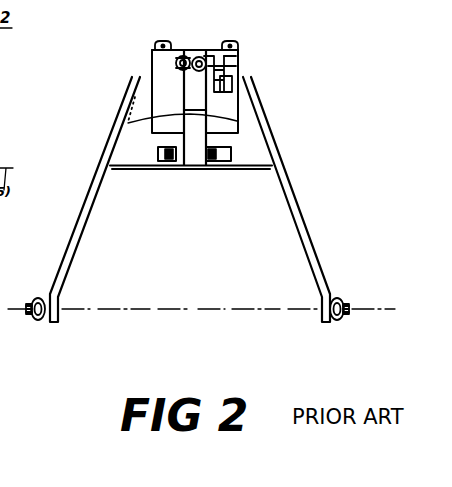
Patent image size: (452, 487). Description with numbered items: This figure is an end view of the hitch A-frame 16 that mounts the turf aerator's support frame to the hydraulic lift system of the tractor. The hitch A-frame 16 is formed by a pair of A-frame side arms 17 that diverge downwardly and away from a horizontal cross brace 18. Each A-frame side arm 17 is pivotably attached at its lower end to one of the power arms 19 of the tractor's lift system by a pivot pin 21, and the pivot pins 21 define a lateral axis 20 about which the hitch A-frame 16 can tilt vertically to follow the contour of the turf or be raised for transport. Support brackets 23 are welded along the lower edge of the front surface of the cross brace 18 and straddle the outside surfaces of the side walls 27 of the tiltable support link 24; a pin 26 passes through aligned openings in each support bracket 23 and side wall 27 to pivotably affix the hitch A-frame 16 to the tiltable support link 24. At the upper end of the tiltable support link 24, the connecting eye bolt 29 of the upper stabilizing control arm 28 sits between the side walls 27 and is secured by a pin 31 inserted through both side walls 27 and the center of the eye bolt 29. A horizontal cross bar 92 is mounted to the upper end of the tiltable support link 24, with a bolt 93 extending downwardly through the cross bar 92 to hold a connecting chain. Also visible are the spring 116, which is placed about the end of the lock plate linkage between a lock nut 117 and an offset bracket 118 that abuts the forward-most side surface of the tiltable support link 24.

The hitch A-frame 16 is at (312, 143).
The A-frame side arms 17 is at (92, 221).
The cross brace 18 is at (127, 133).
The power arms 19 is at (39, 320).
The lateral axis 20 is at (182, 313).
The pivot pin 21 is at (30, 297).
The support brackets 23 is at (159, 148).
The tiltable support link 24 is at (216, 118).
The pin 26 is at (158, 167).
The side wall 27 is at (178, 124).
The upper stabilizing control arm 28 is at (202, 53).
The connecting eye bolt 29 is at (195, 53).
The pin 31 is at (235, 60).
The horizontal cross bar 92 is at (212, 46).
The bolt 93 is at (162, 43).
The spring 116 is at (233, 78).
The lock nut 117 is at (232, 70).
The offset bracket 118 is at (131, 96).